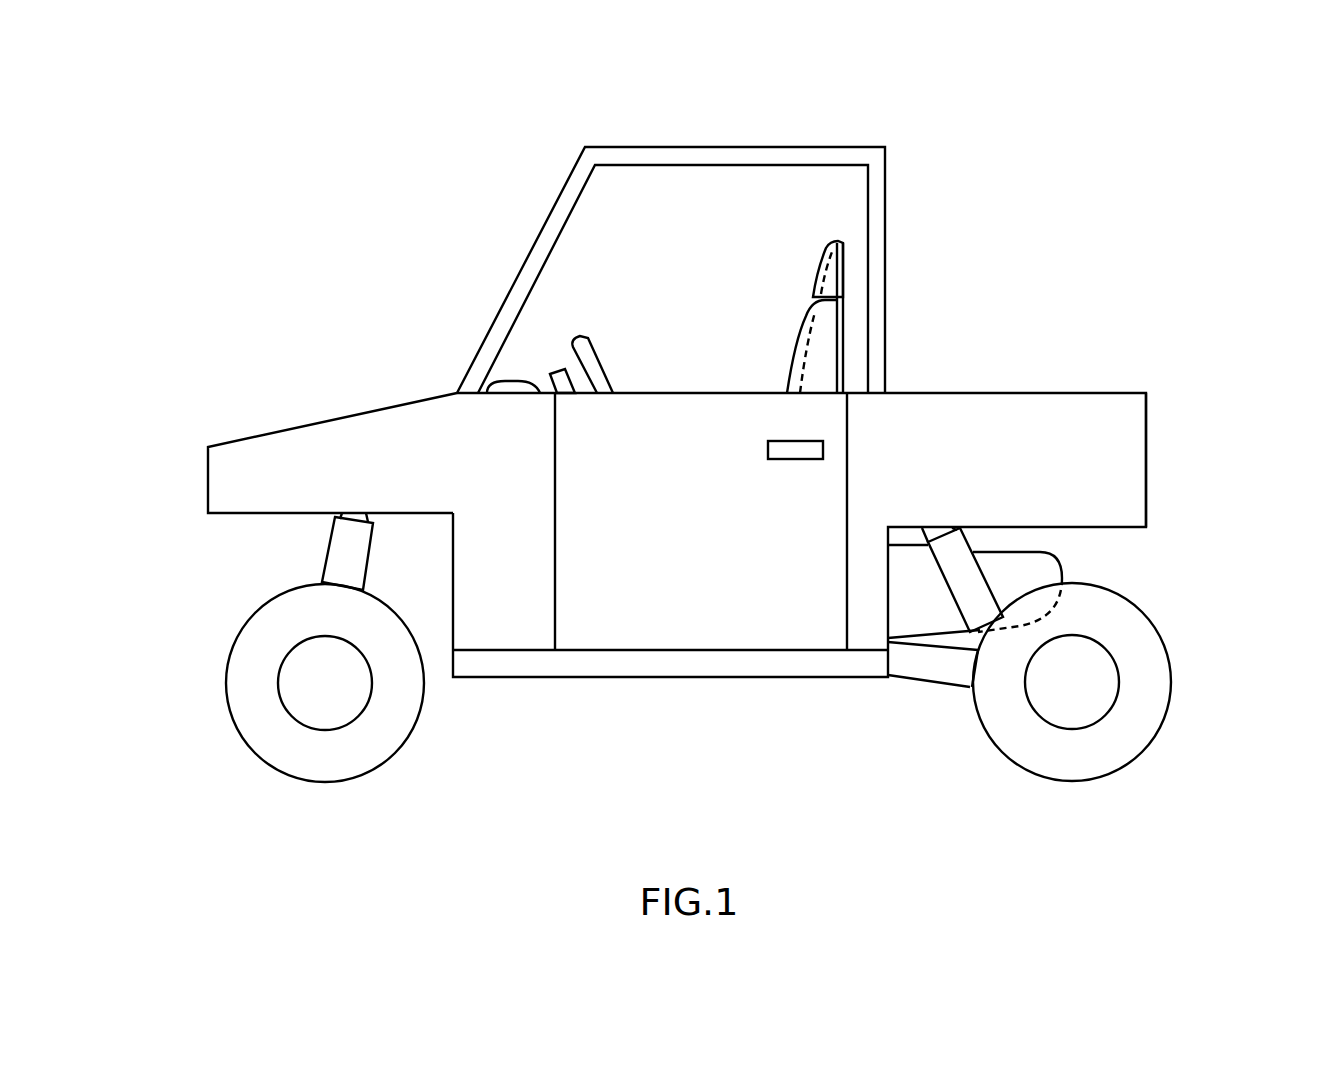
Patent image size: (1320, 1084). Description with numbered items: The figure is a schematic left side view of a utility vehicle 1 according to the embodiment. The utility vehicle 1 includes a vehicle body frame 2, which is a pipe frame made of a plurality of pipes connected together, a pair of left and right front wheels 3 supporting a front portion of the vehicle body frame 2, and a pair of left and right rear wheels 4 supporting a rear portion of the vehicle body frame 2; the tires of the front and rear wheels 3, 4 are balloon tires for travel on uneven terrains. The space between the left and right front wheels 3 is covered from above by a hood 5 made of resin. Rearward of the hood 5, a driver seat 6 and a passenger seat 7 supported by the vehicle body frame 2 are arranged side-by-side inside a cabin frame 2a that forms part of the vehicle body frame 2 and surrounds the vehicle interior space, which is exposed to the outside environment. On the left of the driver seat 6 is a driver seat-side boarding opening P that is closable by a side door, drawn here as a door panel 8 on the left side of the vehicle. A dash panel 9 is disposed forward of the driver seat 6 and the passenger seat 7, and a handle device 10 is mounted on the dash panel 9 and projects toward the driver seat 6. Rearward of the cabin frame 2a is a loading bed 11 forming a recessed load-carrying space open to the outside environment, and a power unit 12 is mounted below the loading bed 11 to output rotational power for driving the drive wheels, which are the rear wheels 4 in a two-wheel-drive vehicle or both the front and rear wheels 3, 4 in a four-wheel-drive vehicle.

The utility vehicle 1 is at (374, 189).
The vehicle body frame 2 is at (799, 580).
The cabin frame 2a is at (562, 192).
The front wheels 3 is at (227, 672).
The rear wheels 4 is at (1172, 672).
The hood 5 is at (295, 428).
The driver seat 6 is at (780, 295).
The passenger seat 7 is at (812, 275).
The door 8 is at (655, 625).
The driver seat-side boarding opening P is at (716, 625).
The dash panel 9 is at (513, 380).
The handle device 10 is at (590, 335).
The loading bed 11 is at (1088, 392).
The power unit 12 is at (1043, 555).